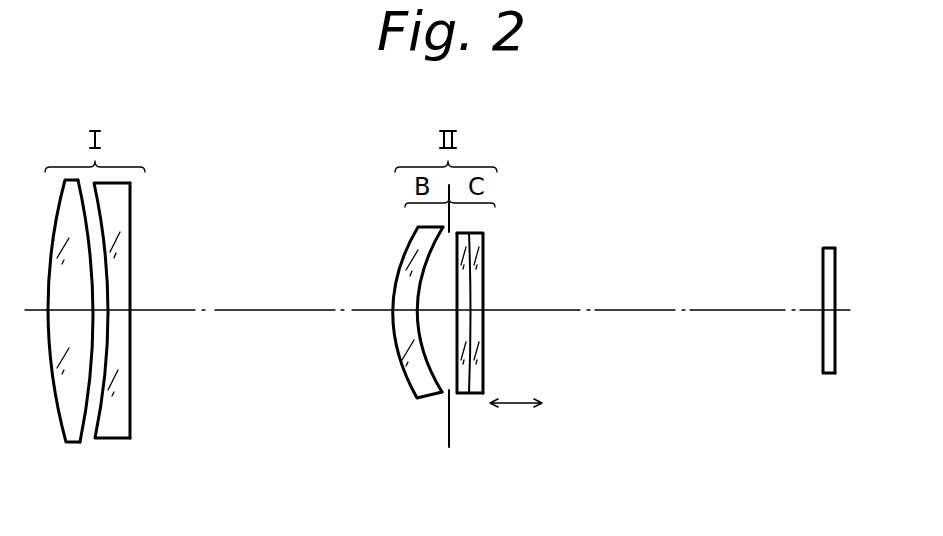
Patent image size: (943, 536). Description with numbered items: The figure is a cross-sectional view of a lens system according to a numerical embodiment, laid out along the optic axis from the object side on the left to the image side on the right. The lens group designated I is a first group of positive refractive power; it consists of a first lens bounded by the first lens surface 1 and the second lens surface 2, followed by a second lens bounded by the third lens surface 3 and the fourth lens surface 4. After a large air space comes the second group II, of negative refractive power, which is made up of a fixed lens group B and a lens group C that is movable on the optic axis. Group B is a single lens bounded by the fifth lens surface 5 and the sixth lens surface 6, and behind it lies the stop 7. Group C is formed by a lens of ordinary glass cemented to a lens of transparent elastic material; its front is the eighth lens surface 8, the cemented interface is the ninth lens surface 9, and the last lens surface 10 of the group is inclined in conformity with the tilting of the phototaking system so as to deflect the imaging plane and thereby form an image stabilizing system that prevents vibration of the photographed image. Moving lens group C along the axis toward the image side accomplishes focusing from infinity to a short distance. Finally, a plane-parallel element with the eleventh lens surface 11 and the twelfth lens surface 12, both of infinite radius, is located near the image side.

The first lens surface 1 is at (61, 431).
The second lens surface 2 is at (84, 432).
The third lens surface 3 is at (100, 205).
The fourth lens surface 4 is at (130, 232).
The fifth lens surface 5 is at (411, 233).
The sixth lens surface 6 is at (430, 382).
The stop 7 is at (449, 433).
The eighth lens surface 8 is at (457, 287).
The ninth lens surface 9 is at (470, 245).
The last lens surface of lens group C 10 is at (483, 262).
The eleventh lens surface 11 is at (823, 348).
The twelfth lens surface 12 is at (835, 360).